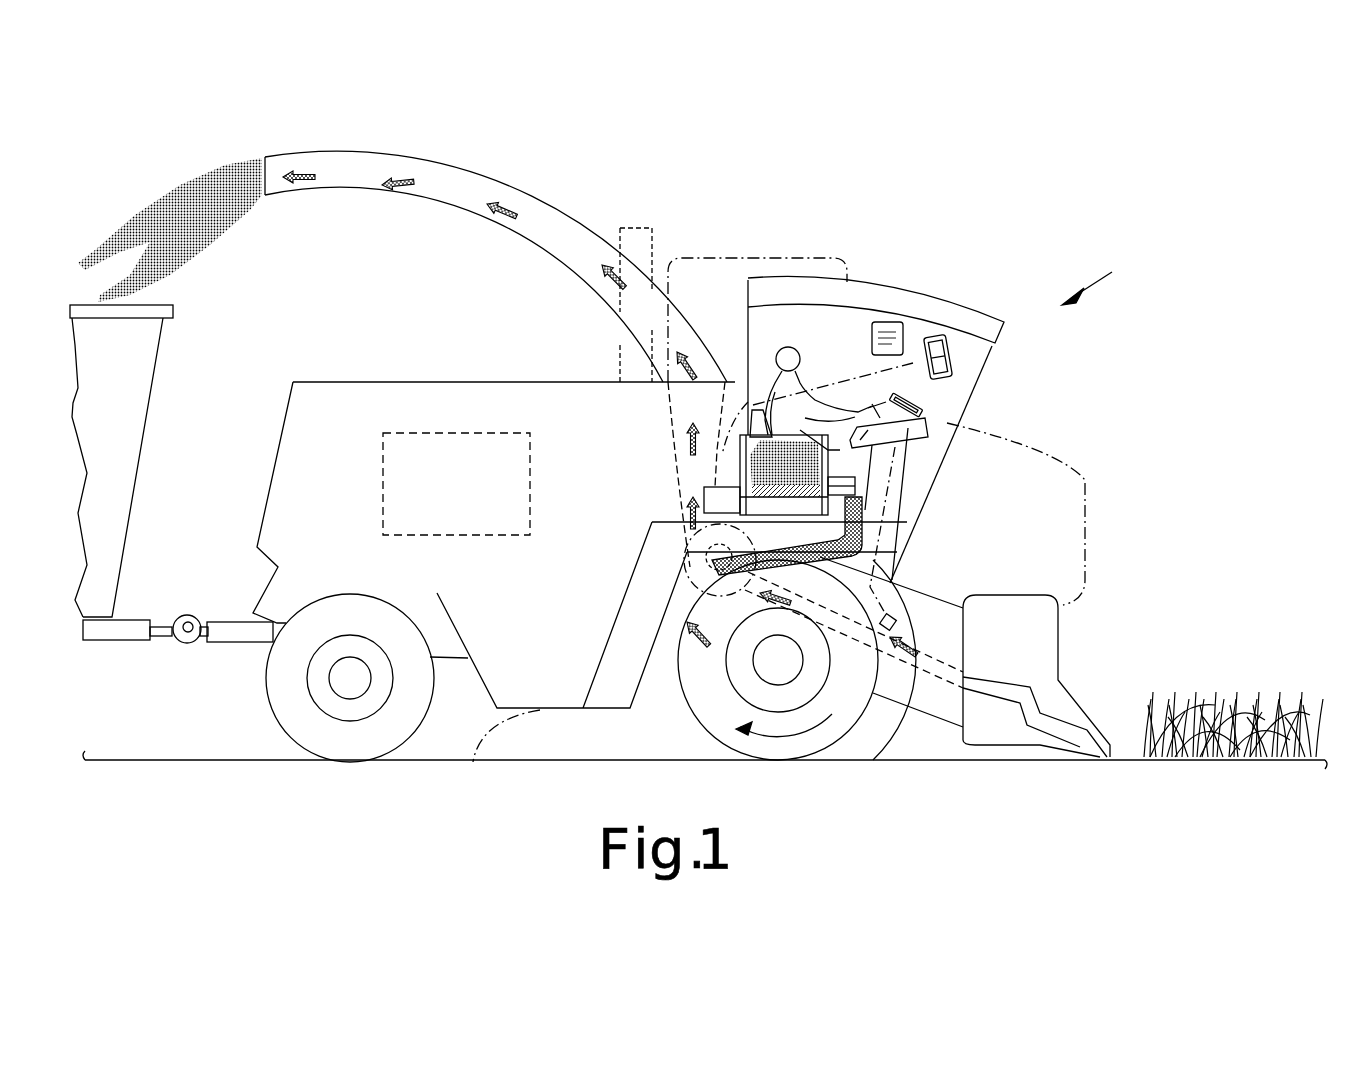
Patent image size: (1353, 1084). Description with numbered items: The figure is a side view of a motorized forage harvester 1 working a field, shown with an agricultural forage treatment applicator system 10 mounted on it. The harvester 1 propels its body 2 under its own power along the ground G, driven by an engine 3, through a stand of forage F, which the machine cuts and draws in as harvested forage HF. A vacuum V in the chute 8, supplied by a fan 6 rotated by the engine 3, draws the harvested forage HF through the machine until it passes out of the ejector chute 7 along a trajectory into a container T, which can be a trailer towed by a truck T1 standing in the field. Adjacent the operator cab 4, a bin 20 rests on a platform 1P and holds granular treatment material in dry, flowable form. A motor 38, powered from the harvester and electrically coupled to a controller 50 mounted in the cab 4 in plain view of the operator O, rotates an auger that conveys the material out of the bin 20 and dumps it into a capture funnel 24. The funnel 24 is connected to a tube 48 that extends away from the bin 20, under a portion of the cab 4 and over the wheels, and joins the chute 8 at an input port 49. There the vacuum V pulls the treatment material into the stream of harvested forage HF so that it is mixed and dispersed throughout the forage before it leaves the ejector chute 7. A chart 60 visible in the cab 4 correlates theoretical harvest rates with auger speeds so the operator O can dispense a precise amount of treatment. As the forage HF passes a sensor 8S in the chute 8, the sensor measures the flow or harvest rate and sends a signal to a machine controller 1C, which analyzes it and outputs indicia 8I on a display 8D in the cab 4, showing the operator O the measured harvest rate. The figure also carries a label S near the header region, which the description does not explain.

The forage harvester 1 is at (1092, 281).
The body 2 is at (265, 578).
The engine 3 is at (383, 512).
The operator cab 4 is at (852, 326).
The fan 6 is at (705, 580).
The ejector chute 7 is at (585, 228).
The chute 8 is at (925, 625).
The sensor 8S is at (893, 637).
The display 8D is at (920, 410).
The indicia 8I is at (915, 398).
The forage treatment applicator system 10 is at (720, 452).
The bin 20 is at (740, 470).
The capture funnel 24 is at (860, 505).
The motor 38 is at (704, 495).
The tube 48 is at (813, 547).
The input port 49 is at (733, 570).
The controller 50 is at (947, 366).
The chart 60 is at (905, 340).
The machine controller 1C is at (918, 442).
The platform 1P is at (900, 545).
The operator O is at (786, 347).
The vacuum V is at (707, 567).
The harvested forage HF is at (175, 243).
The container T is at (148, 405).
The truck T1 is at (720, 258).
The forage F is at (1224, 684).
The pickup S is at (1048, 658).
The ground G is at (965, 762).